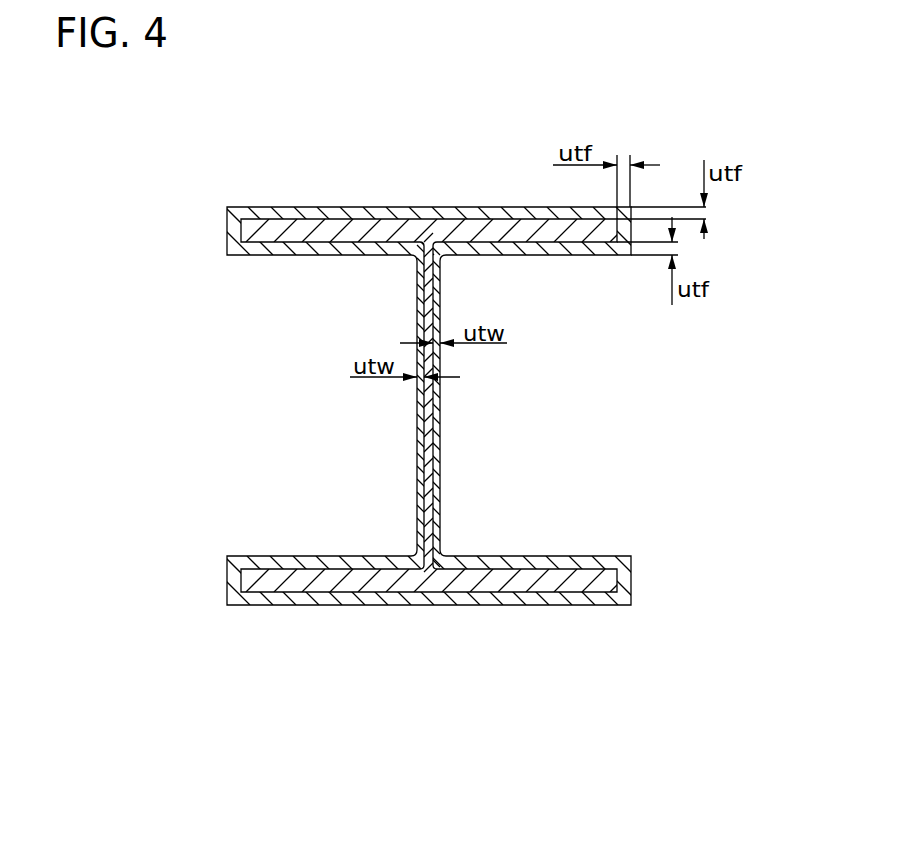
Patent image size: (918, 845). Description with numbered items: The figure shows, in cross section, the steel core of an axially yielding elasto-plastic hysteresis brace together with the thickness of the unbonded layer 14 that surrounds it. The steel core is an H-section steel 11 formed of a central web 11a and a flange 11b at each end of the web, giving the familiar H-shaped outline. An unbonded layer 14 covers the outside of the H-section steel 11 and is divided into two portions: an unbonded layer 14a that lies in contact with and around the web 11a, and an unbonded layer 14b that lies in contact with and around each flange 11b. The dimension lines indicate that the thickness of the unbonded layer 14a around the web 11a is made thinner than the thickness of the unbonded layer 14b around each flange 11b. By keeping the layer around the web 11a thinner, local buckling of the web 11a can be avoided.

The H-section steel 11 is at (237, 228).
The web 11a is at (431, 463).
The flange 11b is at (313, 230).
The unbonded layer 14 is at (633, 577).
The unbonded layer around the web 14a is at (441, 511).
The unbonded layer around the flange 14b is at (518, 207).